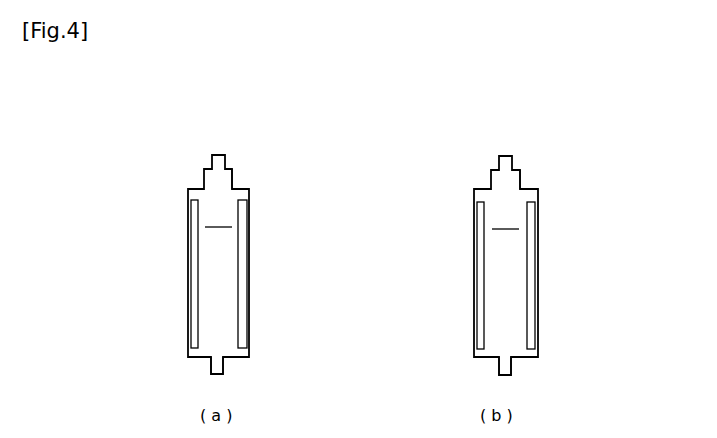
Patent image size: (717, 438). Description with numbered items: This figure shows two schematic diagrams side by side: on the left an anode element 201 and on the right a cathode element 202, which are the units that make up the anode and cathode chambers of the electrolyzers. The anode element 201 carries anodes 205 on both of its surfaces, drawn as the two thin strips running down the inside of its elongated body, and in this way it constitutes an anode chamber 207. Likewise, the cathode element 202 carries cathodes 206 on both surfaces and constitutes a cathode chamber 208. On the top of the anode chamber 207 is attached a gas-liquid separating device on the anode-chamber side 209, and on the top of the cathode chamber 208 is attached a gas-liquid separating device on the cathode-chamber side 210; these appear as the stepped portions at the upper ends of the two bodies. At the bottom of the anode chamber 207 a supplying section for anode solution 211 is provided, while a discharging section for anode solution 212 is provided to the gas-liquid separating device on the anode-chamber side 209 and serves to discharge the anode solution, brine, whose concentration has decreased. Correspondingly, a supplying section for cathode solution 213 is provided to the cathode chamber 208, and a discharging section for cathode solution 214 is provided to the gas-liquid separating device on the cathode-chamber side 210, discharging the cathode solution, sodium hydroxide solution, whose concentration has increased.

The anode element 201 is at (276, 126).
The cathode element 202 is at (556, 126).
The anodes 205 is at (199, 266).
The cathodes 206 is at (485, 270).
The anode chamber 207 is at (219, 218).
The cathode chamber 208 is at (506, 220).
The gas-liquid separating device on the anode-chamber side 209 is at (232, 173).
The gas-liquid separating device on the cathode-chamber side 210 is at (521, 179).
The supplying section for anode solution 211 is at (223, 367).
The discharging section for anode solution 212 is at (215, 155).
The supplying section for cathode solution 213 is at (511, 372).
The discharging section for cathode solution 214 is at (502, 156).